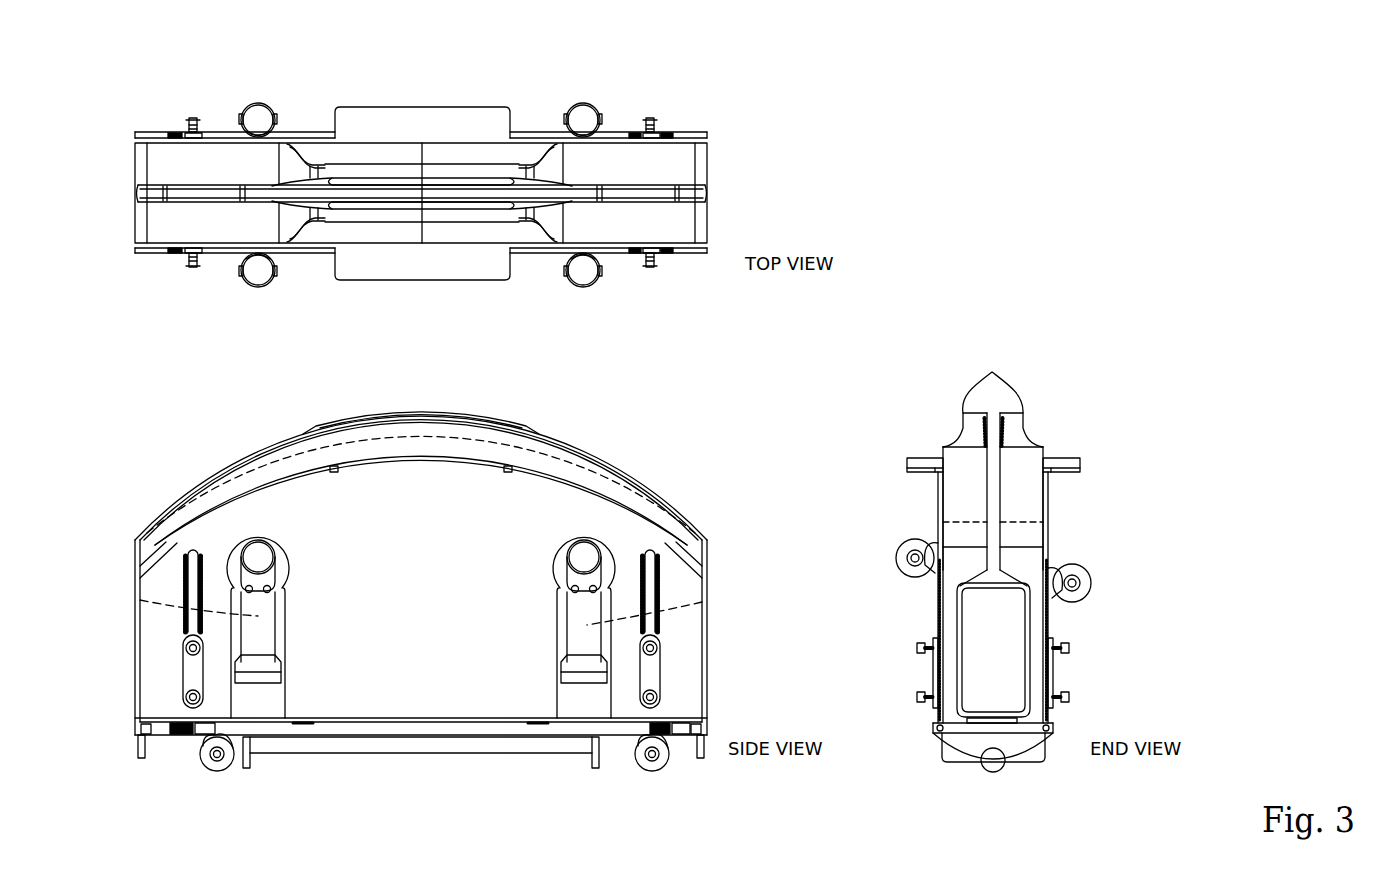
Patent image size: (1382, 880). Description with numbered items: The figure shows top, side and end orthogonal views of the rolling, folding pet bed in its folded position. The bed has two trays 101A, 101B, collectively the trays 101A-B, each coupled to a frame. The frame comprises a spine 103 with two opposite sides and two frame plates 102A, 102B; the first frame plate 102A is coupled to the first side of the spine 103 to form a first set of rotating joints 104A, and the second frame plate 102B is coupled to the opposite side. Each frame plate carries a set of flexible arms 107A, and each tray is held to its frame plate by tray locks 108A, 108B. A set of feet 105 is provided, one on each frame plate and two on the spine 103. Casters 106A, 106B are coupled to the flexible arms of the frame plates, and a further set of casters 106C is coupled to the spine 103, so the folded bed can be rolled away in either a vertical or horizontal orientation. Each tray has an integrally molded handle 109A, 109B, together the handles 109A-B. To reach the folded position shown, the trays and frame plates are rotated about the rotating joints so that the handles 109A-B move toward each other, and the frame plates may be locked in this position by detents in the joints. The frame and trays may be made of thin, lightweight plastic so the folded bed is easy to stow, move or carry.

The tray 101A is at (630, 505).
The tray 101B is at (1022, 458).
The trays 101A-B is at (680, 162).
The first frame plate 102A is at (152, 642).
The second frame plate 102B is at (1047, 510).
The spine 103 is at (955, 740).
The first set of rotating joints 104A is at (470, 737).
The feet 105 is at (413, 128).
The caster 106A is at (262, 276).
The caster 106B is at (256, 112).
The casters 106C is at (215, 768).
The flexible arms 107A is at (185, 612).
The tray lock 108A is at (190, 678).
The tray lock 108B is at (1057, 677).
The handle 109A is at (497, 232).
The handle 109B is at (501, 158).
The handles 109A-B is at (999, 383).